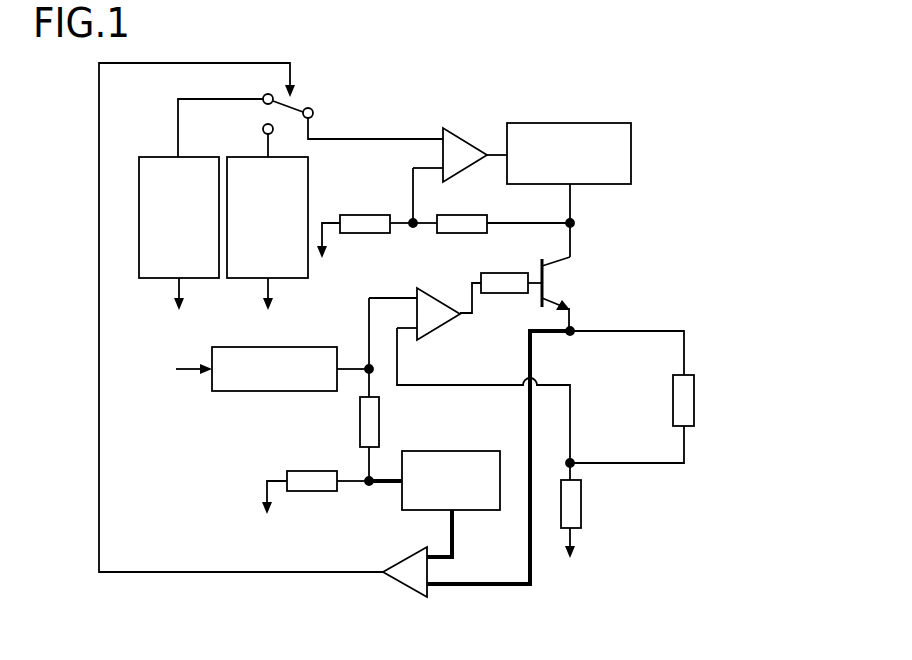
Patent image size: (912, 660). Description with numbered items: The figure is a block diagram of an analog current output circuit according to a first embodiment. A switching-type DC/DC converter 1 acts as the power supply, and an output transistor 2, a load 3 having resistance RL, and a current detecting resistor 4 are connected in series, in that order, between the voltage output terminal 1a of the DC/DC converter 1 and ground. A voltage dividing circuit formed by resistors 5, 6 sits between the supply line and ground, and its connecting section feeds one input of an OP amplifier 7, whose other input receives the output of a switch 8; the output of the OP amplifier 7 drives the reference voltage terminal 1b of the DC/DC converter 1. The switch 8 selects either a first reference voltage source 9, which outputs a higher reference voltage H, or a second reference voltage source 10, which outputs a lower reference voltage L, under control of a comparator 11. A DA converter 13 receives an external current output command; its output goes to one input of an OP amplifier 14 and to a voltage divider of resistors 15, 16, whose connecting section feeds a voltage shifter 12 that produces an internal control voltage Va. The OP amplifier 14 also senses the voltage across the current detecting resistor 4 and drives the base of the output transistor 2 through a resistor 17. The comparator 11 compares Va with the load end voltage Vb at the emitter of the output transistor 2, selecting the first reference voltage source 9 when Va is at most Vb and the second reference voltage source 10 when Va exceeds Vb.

The DC/DC converter 1 is at (612, 123).
The voltage output terminal 1a is at (567, 190).
The reference voltage terminal 1b is at (497, 150).
The output transistor 2 is at (535, 301).
The load 3 is at (694, 401).
The current detecting resistor 4 is at (581, 505).
The resistor 5 is at (470, 215).
The resistor 6 is at (372, 215).
The OP amplifier 7 is at (459, 128).
The switch 8 is at (298, 103).
The first reference voltage source 9 is at (253, 157).
The second reference voltage source 10 is at (158, 157).
The comparator 11 is at (406, 592).
The voltage shifter 12 is at (466, 451).
The DA converter 13 is at (312, 347).
The OP amplifier 14 is at (427, 288).
The resistor 15 is at (380, 421).
The resistor 16 is at (320, 471).
The resistor 17 is at (517, 273).